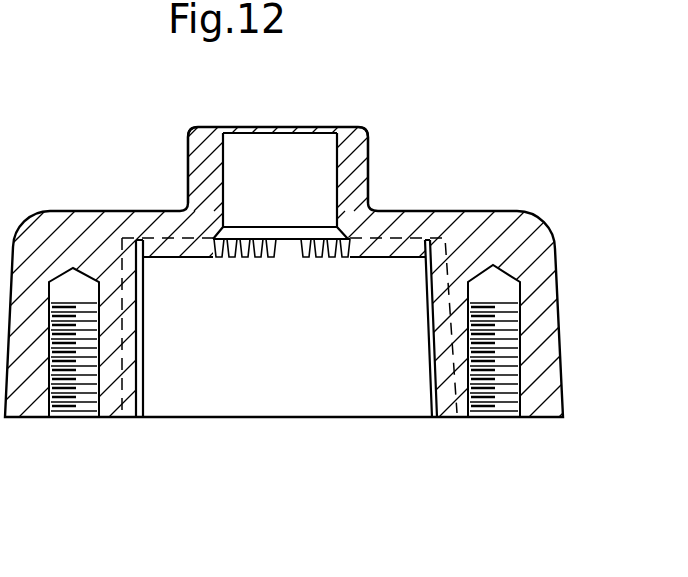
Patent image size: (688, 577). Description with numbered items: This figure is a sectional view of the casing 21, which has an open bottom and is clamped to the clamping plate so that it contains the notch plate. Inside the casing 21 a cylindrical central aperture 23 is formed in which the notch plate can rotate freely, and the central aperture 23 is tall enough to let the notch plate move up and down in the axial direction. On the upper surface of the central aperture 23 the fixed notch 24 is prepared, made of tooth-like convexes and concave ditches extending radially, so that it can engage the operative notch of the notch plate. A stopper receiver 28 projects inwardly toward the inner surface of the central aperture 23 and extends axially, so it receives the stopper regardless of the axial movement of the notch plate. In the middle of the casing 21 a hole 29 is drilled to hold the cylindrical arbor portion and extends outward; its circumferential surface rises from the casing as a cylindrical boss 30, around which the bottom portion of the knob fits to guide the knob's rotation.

The casing 21 is at (537, 230).
The central aperture 23 is at (427, 352).
The fixed notch 24 is at (290, 257).
The stopper receiver 28 is at (143, 360).
The hole 29 is at (333, 157).
The cylindrical boss 30 is at (198, 145).